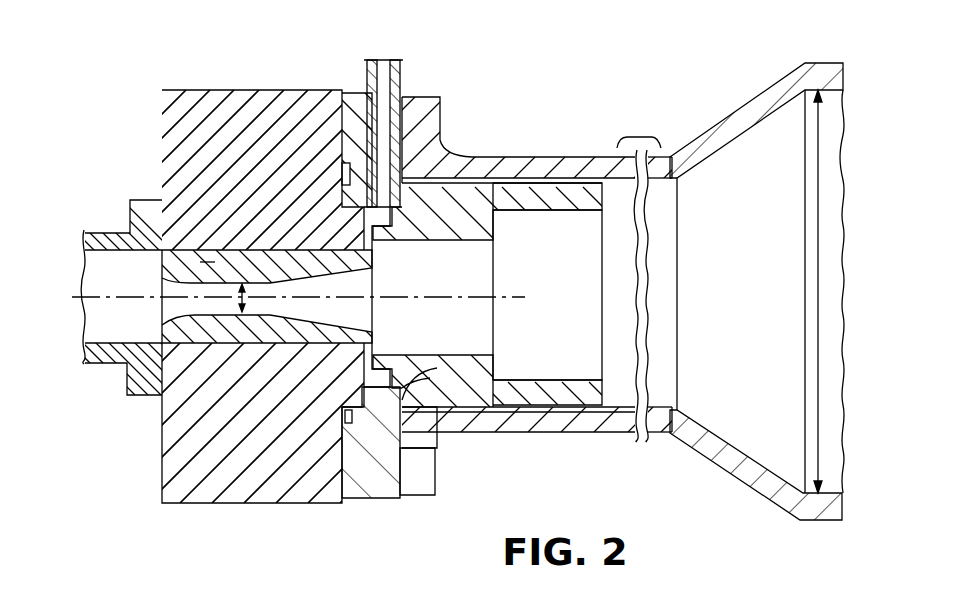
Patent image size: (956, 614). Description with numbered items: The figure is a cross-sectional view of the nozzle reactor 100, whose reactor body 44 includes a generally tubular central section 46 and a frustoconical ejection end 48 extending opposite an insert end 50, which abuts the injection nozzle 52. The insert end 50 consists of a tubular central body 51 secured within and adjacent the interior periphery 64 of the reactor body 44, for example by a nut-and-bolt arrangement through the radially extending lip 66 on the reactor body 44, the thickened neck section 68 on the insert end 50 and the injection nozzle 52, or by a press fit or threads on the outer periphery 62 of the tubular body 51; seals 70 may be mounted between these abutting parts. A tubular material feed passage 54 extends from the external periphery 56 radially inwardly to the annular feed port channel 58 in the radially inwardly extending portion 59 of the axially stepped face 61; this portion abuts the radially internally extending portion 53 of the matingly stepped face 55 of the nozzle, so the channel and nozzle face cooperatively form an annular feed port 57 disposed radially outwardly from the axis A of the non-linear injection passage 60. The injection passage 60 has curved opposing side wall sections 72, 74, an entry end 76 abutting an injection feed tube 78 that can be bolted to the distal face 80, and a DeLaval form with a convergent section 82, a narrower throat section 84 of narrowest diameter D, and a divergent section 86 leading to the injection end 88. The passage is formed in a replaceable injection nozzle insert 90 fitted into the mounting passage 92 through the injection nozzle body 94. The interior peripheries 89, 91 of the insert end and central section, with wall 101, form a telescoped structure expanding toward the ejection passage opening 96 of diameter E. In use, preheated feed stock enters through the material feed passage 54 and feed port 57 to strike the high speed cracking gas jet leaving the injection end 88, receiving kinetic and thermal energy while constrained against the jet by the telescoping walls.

The reactor body 44 is at (525, 157).
The tubular central section 46 is at (581, 162).
The frustoconical ejection end 48 is at (722, 120).
The insert end 50 is at (356, 95).
The tubular central body 51 is at (462, 398).
The injection nozzle 52 is at (272, 92).
The radially internally extending portion 53 is at (330, 240).
The material feed passage 54 is at (383, 130).
The matingly stepped face 55 is at (432, 494).
The external periphery 56 is at (380, 499).
The annular feed port 57 is at (383, 222).
The feed port channel 58 is at (440, 455).
The radially inwardly extending portion 59 is at (345, 190).
The injection passage 60 is at (330, 273).
The axially stepped face 61 is at (342, 135).
The outer periphery 62 is at (543, 415).
The interior periphery 64 is at (508, 407).
The radially extending lip 66 is at (430, 112).
The thickened neck section 68 is at (363, 480).
The seal 70 is at (327, 398).
The curved side wall section 72 is at (165, 322).
The curved side wall section 74 is at (165, 277).
The entry end 76 is at (122, 257).
The injection feed tube 78 is at (118, 362).
The distal face 80 is at (162, 127).
The convergent section 82 is at (165, 412).
The throat section 84 is at (243, 370).
The divergent section 86 is at (280, 228).
The injection end 88 is at (340, 320).
The interior periphery 89 is at (495, 358).
The injection nozzle insert 90 is at (205, 260).
The interior periphery 91 is at (663, 406).
The injection nozzle mounting passage 92 is at (213, 365).
The injection nozzle body 94 is at (200, 130).
The ejection passage opening 96 is at (833, 93).
The nozzle reactor 100 is at (625, 449).
The telescoping interior wall 101 is at (735, 447).
The axis A is at (400, 284).
The narrowest diameter D is at (244, 288).
The ejection passage opening diameter E is at (818, 340).